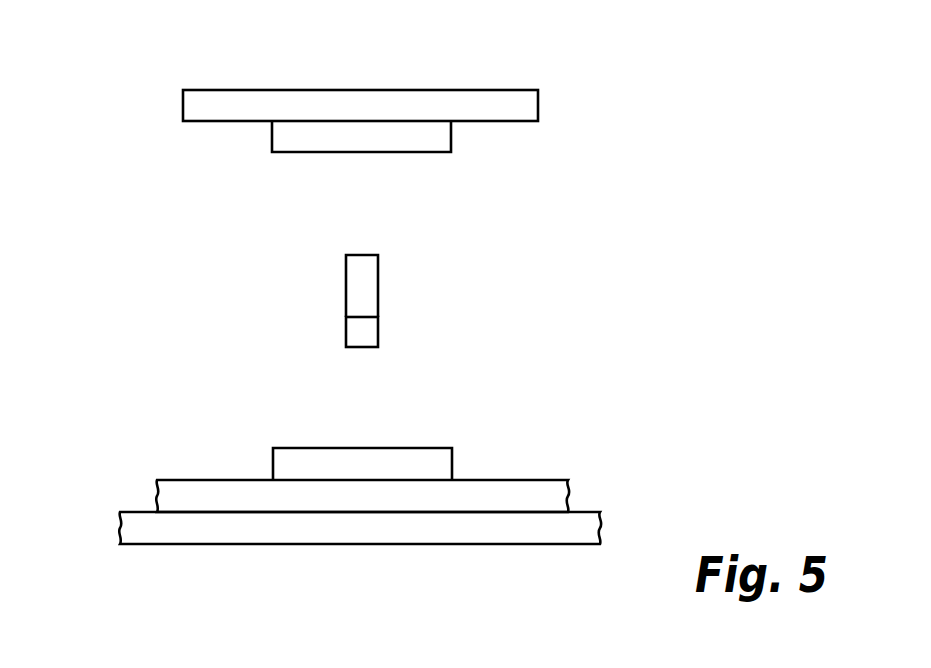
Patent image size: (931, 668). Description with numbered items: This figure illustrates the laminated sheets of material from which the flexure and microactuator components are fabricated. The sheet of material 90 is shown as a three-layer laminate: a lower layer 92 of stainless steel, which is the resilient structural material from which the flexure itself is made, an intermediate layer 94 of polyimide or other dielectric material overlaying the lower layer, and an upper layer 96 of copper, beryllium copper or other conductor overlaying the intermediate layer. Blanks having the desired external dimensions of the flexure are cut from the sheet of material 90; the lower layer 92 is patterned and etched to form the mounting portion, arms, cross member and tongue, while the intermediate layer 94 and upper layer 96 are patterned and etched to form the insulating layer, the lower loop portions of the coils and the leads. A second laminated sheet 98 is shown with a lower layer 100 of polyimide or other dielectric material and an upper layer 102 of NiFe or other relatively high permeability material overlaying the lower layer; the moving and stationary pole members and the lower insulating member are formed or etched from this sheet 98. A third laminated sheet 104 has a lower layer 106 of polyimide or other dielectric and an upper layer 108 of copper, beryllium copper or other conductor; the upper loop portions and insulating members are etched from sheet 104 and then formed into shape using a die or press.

The laminated sheet of material 90 is at (349, 465).
The lower layer 92 is at (120, 527).
The intermediate layer 94 is at (157, 485).
The upper layer 96 is at (273, 458).
The laminated sheet of material 98 is at (382, 286).
The lower layer 100 is at (346, 330).
The upper layer 102 is at (346, 270).
The laminated sheet of material 104 is at (409, 96).
The lower layer 106 is at (272, 137).
The upper layer 108 is at (183, 107).